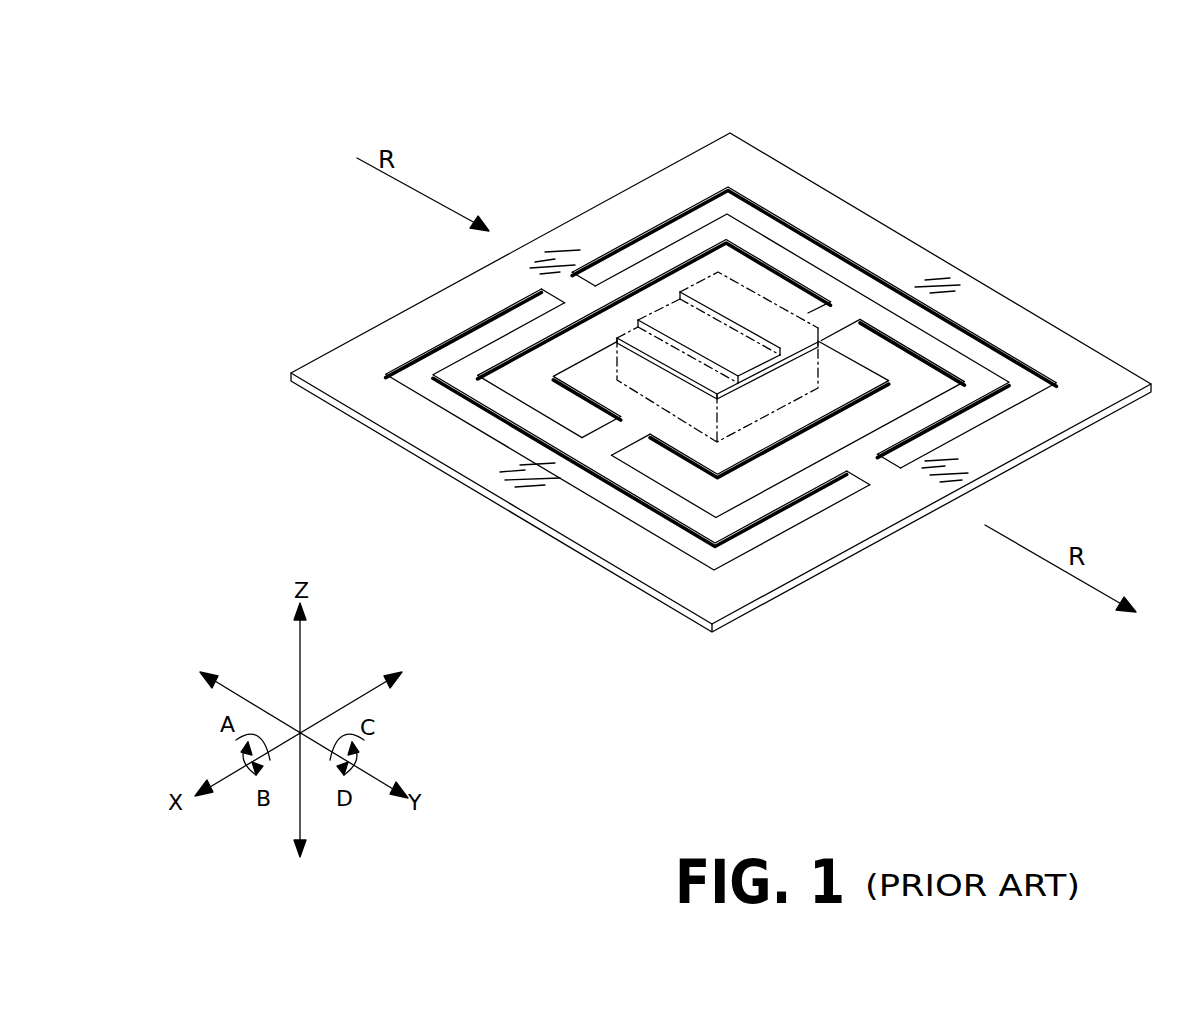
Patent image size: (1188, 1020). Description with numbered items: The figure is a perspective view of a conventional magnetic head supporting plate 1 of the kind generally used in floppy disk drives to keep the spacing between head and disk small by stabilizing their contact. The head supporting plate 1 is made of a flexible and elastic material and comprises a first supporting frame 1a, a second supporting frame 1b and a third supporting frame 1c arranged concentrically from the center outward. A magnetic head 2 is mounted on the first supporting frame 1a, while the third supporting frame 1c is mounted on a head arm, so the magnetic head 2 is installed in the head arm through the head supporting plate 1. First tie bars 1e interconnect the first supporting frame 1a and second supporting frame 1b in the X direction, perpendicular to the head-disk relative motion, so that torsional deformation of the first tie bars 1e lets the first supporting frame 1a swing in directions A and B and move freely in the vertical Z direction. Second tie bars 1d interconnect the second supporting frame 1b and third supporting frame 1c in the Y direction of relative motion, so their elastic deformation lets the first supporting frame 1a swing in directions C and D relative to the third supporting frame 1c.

The head supporting plate 1 is at (724, 343).
The first supporting frame 1a is at (668, 440).
The second supporting frame 1b is at (680, 512).
The third supporting frame 1c is at (1072, 348).
The second tie bars 1d is at (520, 252).
The first tie bars 1e is at (833, 317).
The magnetic head 2 is at (752, 320).